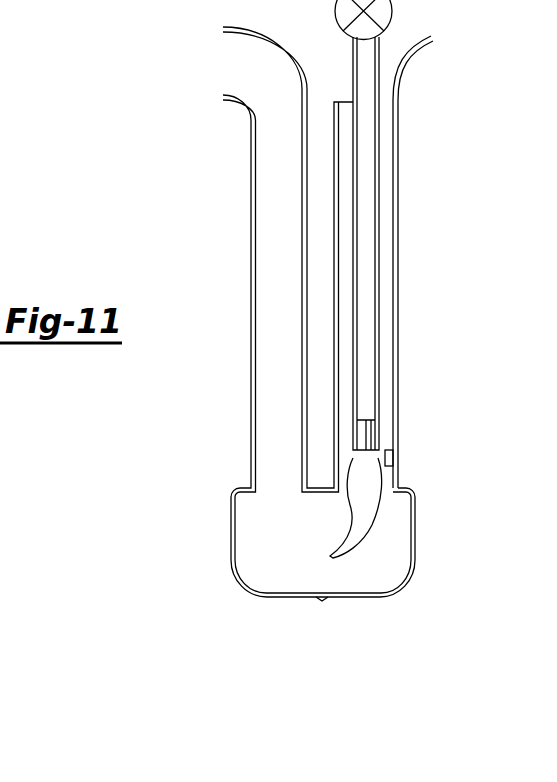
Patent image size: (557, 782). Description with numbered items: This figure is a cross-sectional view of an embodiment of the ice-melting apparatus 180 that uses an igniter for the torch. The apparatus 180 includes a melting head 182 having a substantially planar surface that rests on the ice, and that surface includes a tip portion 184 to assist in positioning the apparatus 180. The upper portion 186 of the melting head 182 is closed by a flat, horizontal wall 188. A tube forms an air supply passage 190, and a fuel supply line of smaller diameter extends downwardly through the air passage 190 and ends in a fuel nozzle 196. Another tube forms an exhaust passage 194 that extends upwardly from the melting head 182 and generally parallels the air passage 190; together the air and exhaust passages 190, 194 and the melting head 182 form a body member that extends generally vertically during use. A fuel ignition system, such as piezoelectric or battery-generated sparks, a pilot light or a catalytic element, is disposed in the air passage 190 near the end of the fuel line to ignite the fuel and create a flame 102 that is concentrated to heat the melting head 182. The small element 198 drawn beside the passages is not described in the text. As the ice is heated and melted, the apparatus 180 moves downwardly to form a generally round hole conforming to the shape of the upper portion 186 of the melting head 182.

The flame 102 is at (355, 512).
The apparatus 180 is at (420, 173).
The melting head 182 is at (413, 563).
The tip portion 184 is at (322, 601).
The upper portion 186 is at (406, 489).
The flat horizontal wall 188 is at (250, 488).
The air supply passage 190 is at (385, 132).
The exhaust passage 194 is at (278, 242).
The fuel nozzle 196 is at (372, 430).
The stop 198 is at (400, 455).